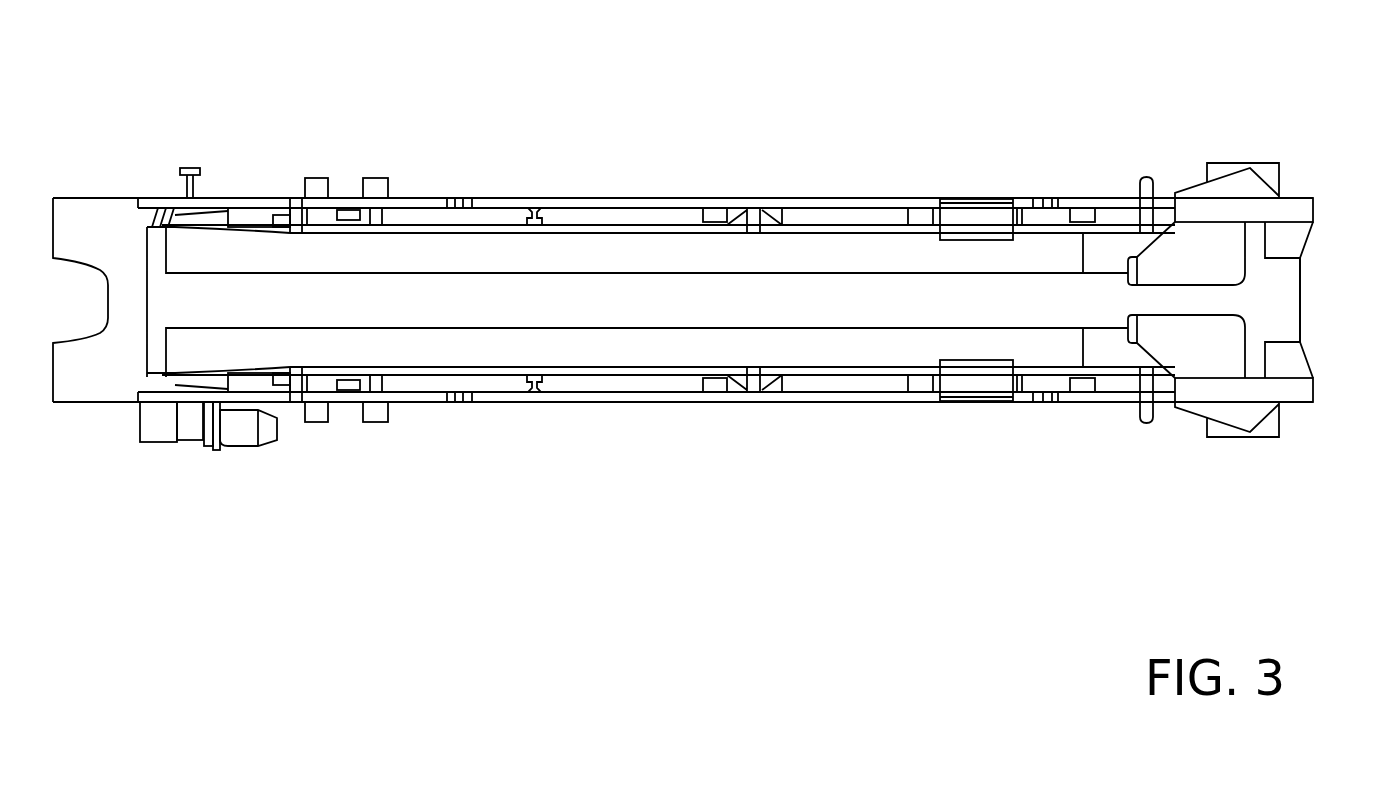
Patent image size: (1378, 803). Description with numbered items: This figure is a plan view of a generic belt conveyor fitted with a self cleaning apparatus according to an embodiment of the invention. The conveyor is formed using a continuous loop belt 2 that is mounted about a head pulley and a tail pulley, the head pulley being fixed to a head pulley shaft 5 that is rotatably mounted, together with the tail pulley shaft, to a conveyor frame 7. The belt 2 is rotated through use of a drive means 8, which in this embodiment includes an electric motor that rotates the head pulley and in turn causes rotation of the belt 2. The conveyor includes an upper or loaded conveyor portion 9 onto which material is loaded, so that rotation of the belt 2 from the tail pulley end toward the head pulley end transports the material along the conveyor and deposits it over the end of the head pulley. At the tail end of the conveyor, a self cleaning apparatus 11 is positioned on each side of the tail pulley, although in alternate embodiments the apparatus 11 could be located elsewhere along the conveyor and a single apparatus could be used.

The continuous loop belt 2 is at (642, 253).
The head pulley shaft 5 is at (153, 223).
The conveyor frame 7 is at (670, 403).
The drive means 8 is at (270, 443).
The upper or loaded conveyor portion 9 is at (182, 303).
The self cleaning apparatus 11 is at (1287, 195).